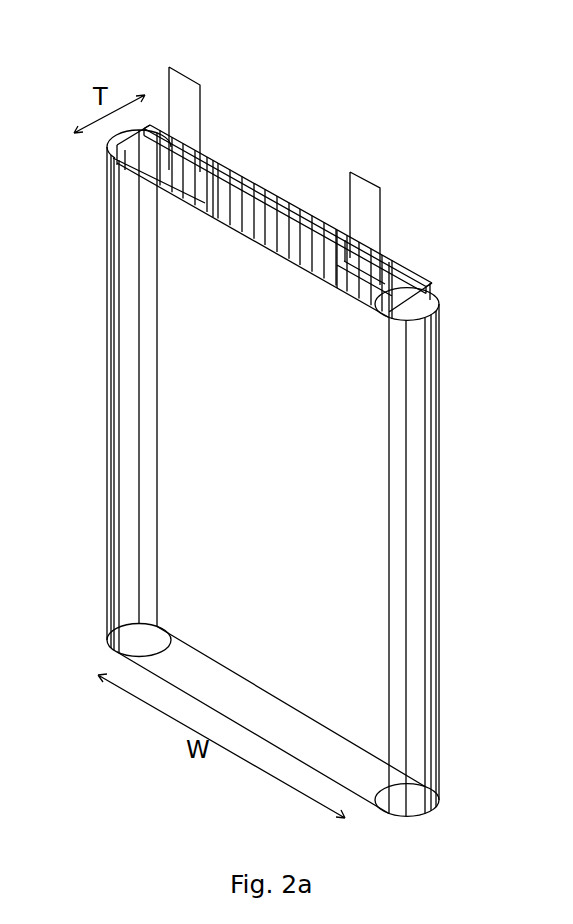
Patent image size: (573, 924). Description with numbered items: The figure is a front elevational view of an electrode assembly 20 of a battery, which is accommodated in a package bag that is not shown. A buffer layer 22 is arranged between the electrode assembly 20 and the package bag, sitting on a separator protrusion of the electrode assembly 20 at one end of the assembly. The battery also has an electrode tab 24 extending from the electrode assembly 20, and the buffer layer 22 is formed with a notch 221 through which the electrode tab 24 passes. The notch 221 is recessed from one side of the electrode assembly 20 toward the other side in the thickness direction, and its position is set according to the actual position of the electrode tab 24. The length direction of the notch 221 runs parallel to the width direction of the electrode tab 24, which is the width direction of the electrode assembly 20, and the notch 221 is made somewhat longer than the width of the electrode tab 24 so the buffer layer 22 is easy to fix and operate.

The electrode assembly 20 is at (160, 62).
The buffer layer 22 is at (267, 187).
The electrode tab 24 is at (381, 207).
The notch 221 is at (383, 262).